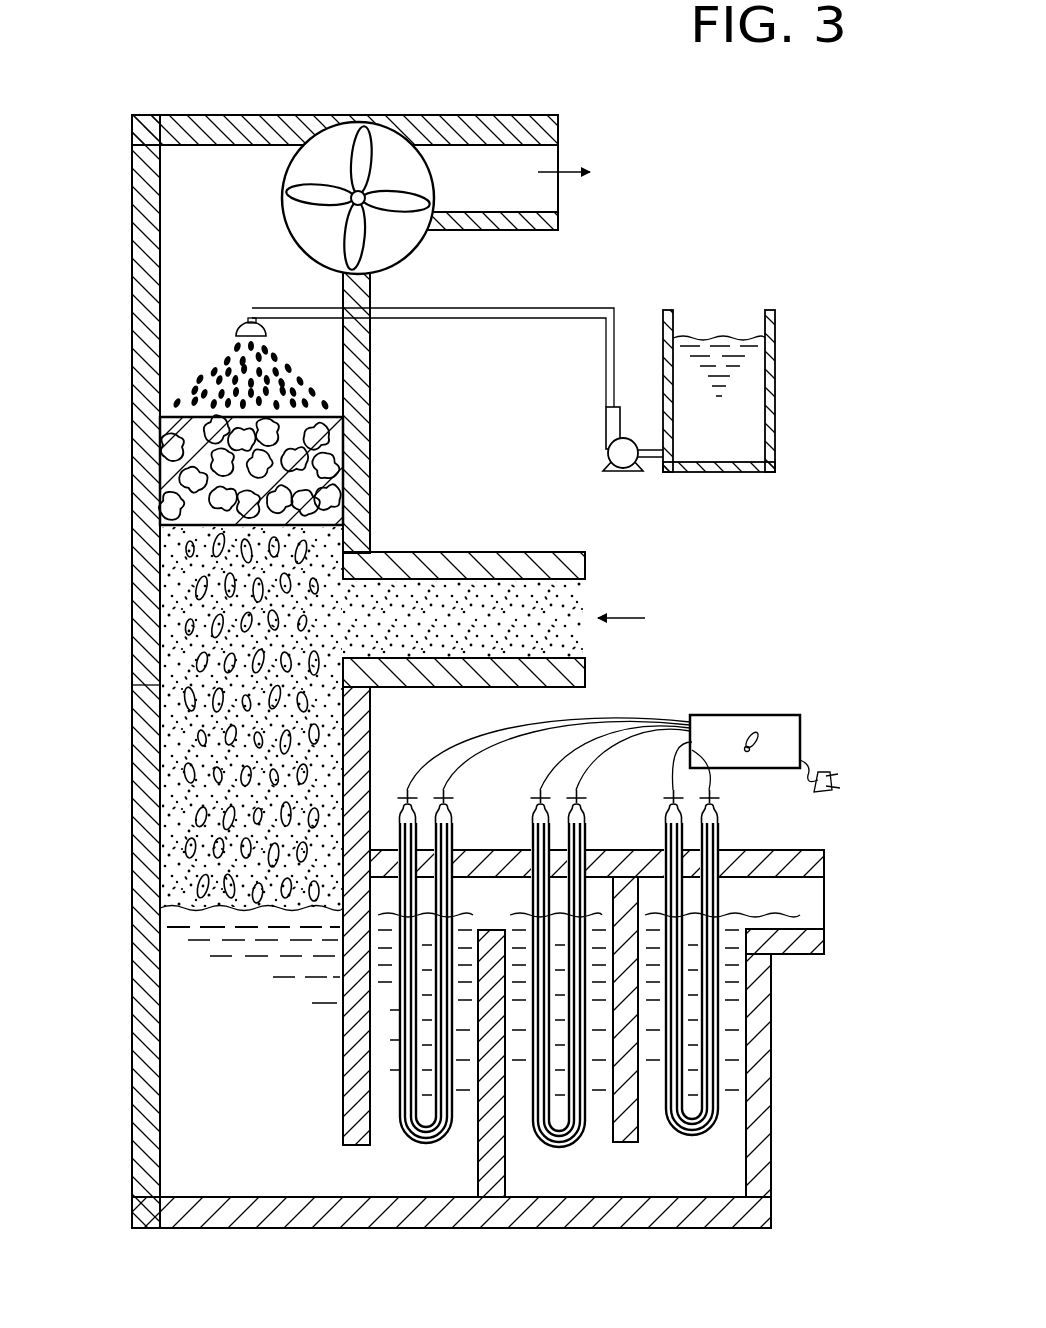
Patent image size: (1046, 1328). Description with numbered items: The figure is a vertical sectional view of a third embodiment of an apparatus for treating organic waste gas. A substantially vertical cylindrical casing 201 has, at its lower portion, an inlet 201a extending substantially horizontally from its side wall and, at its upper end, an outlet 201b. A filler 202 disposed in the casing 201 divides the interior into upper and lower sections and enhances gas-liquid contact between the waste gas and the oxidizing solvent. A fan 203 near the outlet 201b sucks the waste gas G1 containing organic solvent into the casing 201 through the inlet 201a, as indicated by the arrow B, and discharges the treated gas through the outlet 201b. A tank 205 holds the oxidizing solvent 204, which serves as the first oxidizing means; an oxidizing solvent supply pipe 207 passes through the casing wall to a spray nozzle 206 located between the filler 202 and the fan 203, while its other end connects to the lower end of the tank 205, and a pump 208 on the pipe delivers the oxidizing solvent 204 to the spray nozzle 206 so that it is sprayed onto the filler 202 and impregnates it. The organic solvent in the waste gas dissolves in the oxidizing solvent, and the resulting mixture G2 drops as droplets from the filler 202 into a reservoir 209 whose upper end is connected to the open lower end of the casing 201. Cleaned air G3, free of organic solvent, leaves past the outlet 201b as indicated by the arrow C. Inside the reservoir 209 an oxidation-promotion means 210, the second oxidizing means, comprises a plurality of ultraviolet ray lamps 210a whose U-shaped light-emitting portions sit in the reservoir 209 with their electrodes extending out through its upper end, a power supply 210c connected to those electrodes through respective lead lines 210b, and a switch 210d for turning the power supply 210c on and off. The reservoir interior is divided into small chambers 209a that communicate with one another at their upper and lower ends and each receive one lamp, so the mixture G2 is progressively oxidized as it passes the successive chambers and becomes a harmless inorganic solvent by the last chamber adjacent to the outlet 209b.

The casing 201 is at (375, 358).
The inlet 201a is at (487, 587).
The outlet 201b is at (504, 135).
The filler 202 is at (337, 455).
The fan 203 is at (425, 243).
The oxidizing solvent 204 is at (192, 368).
The tank 205 is at (776, 372).
The spray nozzle 206 is at (242, 325).
The oxidizing solvent supply pipe 207 is at (527, 318).
The pump 208 is at (627, 473).
The reservoir 209 is at (376, 718).
The small chambers 209a is at (477, 1132).
The outlet 209b is at (822, 880).
The oxidation-promotion means 210 is at (604, 904).
The ultraviolet ray lamps 210a is at (415, 1140).
The lead lines 210b is at (650, 722).
The power supply 210c is at (762, 716).
The switch 210d is at (757, 740).
The waste gas G1 is at (180, 650).
The mixture G2 is at (180, 1067).
The air G3 is at (180, 262).
The arrow B is at (634, 623).
The arrow C is at (579, 173).